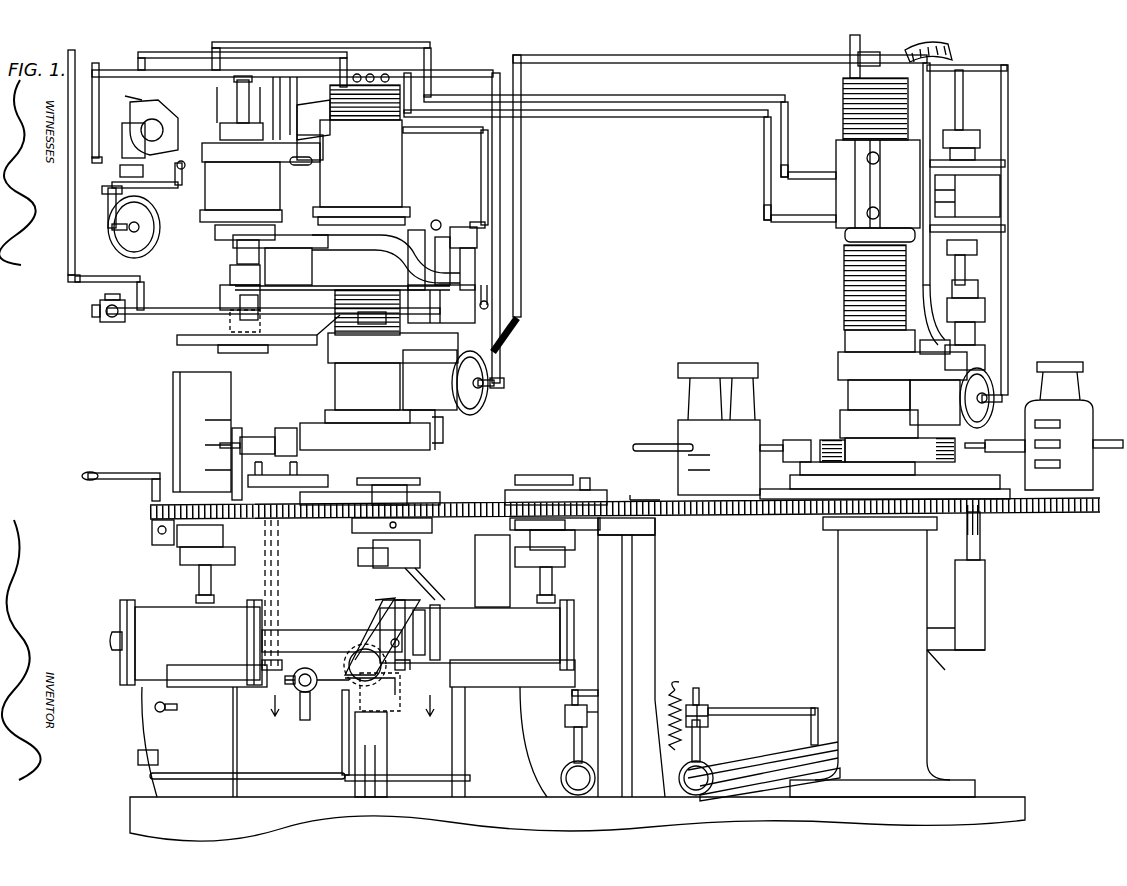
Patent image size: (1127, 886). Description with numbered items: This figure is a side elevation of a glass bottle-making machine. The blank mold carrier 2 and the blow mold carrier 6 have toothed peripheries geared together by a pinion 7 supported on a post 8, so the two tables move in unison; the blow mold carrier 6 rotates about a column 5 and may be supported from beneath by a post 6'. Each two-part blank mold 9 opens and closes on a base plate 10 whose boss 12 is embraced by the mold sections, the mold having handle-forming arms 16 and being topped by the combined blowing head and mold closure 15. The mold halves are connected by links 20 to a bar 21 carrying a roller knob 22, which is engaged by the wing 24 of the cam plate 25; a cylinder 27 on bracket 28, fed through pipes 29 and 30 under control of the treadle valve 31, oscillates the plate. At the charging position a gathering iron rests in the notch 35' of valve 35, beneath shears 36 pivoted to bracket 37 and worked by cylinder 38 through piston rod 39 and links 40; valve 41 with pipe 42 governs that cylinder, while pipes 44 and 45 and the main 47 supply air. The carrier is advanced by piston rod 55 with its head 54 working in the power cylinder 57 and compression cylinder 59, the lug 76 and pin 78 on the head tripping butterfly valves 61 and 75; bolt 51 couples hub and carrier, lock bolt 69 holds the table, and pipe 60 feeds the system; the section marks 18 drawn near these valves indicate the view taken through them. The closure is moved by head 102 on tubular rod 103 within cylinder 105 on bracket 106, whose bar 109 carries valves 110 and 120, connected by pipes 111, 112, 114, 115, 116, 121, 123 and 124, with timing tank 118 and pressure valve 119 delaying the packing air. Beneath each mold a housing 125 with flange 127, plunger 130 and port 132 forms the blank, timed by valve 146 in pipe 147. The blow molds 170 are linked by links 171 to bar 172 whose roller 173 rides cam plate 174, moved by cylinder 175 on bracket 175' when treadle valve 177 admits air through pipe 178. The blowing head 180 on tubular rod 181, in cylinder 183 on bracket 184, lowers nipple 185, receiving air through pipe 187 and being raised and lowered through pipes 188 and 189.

The blank mold carrier 2 is at (450, 504).
The post or column 5 is at (845, 262).
The blow mold carrier 6 is at (882, 650).
The post 6' is at (967, 591).
The pinion 7 is at (648, 502).
The post 8 is at (650, 577).
The blank mold 9 is at (175, 387).
The base plate 10 is at (350, 500).
The boss 12 is at (374, 480).
The combined blowing head and mold closure 15 is at (275, 350).
The handle-forming arms 16 is at (143, 478).
The arrow 18 is at (356, 708).
The links 20 is at (255, 440).
The bar 21 is at (297, 458).
The roller knob 22 is at (290, 428).
The wing 24 is at (444, 432).
The cam plate 25 is at (365, 436).
The cylinder 27 is at (448, 382).
The bracket 28 is at (330, 365).
The pipe 29 is at (498, 355).
The pipe 30 is at (818, 52).
The treadle-operated valve 31 is at (578, 781).
The valve 35 is at (106, 322).
The notch 35' is at (71, 308).
The shears 36 is at (926, 97).
The bracket 37 is at (346, 258).
The cylinder 38 is at (441, 304).
The piston rod 39 is at (395, 300).
The links 40 is at (358, 322).
The oscillating valve 41 is at (450, 235).
The pipe 42 is at (434, 228).
The compressed air pipe 44 is at (100, 276).
The pipe 45 is at (186, 309).
The compressed air line 47 is at (574, 750).
The spring-raised bolt 51 is at (270, 602).
The head 54 is at (385, 622).
The piston rod 55 is at (304, 642).
The power cylinder 57 is at (477, 698).
The compression cylinder 59 is at (193, 698).
The pipe 60 is at (481, 165).
The first butterfly valve 61 is at (350, 672).
The lock bolt 69 is at (488, 526).
The butterfly valve 75 is at (300, 694).
The lug 76 is at (400, 706).
The pin 78 is at (400, 642).
The head 102 is at (230, 293).
The tubular rod 103 is at (237, 90).
The cylinder 105 is at (260, 182).
The bracket 106 is at (400, 175).
The bar 109 is at (225, 117).
The oscillating valve 110 is at (320, 130).
The pipe 111 is at (118, 120).
The pipe 112 is at (312, 157).
The pipe 114 is at (342, 758).
The pipe 115 is at (220, 113).
The branch 116 is at (182, 168).
The timing tank 118 is at (148, 227).
The pressure valve 119 is at (106, 196).
The oscillating valve 120 is at (160, 120).
The pipe 121 is at (163, 188).
The pipe 123 is at (138, 99).
The pipe 124 is at (138, 82).
The housing 125 is at (428, 548).
The annular flange 127 is at (182, 556).
The plunger 130 is at (211, 583).
The port 132 is at (398, 522).
The timing valve 146 is at (110, 640).
The pipe 147 is at (161, 718).
The blow mold 170 is at (900, 416).
The links 171 is at (796, 438).
The bar 172 is at (838, 468).
The roller 173 is at (828, 438).
The cam plate 174 is at (885, 430).
The cylinder 175 is at (952, 398).
The bracket 175' is at (875, 381).
The treadle valve 177 is at (758, 771).
The pipe 178 is at (758, 783).
The blowing head 180 is at (966, 312).
The tubular piston rod 181 is at (958, 103).
The cylinder 183 is at (967, 229).
The bracket 184 is at (878, 191).
The tubular nipple 185 is at (985, 352).
The branch pipe 187 is at (905, 50).
The pipe 188 is at (771, 218).
The pipe 189 is at (788, 174).